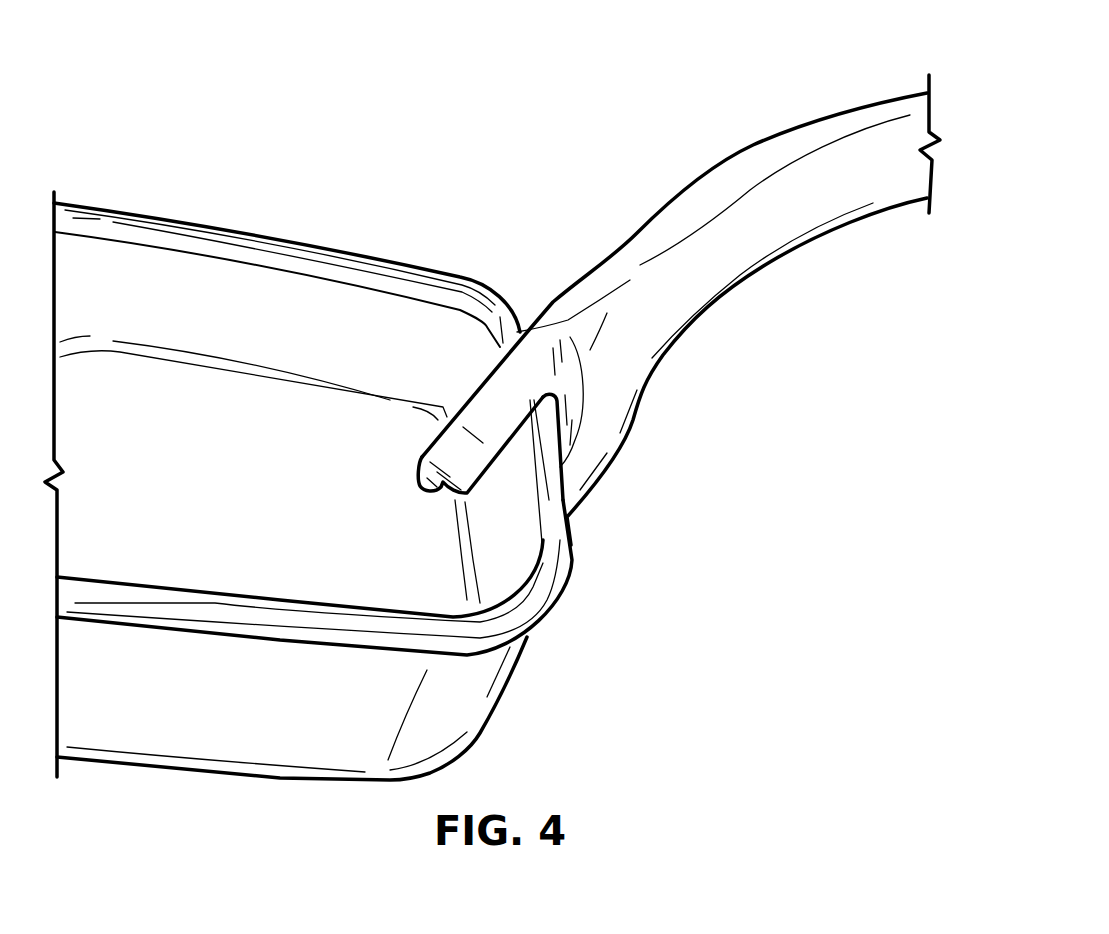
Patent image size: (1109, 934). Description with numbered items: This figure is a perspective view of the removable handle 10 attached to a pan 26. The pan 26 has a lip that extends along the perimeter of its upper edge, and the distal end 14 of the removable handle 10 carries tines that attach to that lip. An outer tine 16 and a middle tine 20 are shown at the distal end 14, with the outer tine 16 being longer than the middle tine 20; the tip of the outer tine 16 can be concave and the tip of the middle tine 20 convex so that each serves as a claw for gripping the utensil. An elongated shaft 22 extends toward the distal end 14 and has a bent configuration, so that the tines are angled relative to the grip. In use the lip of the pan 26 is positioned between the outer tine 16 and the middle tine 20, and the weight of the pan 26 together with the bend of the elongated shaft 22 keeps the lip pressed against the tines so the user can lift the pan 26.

The removable handle 10 is at (893, 62).
The distal end 14 is at (603, 262).
The outer tine 16 is at (492, 383).
The middle tine 20 is at (607, 473).
The elongated shaft 22 is at (760, 138).
The pan 26 is at (245, 236).